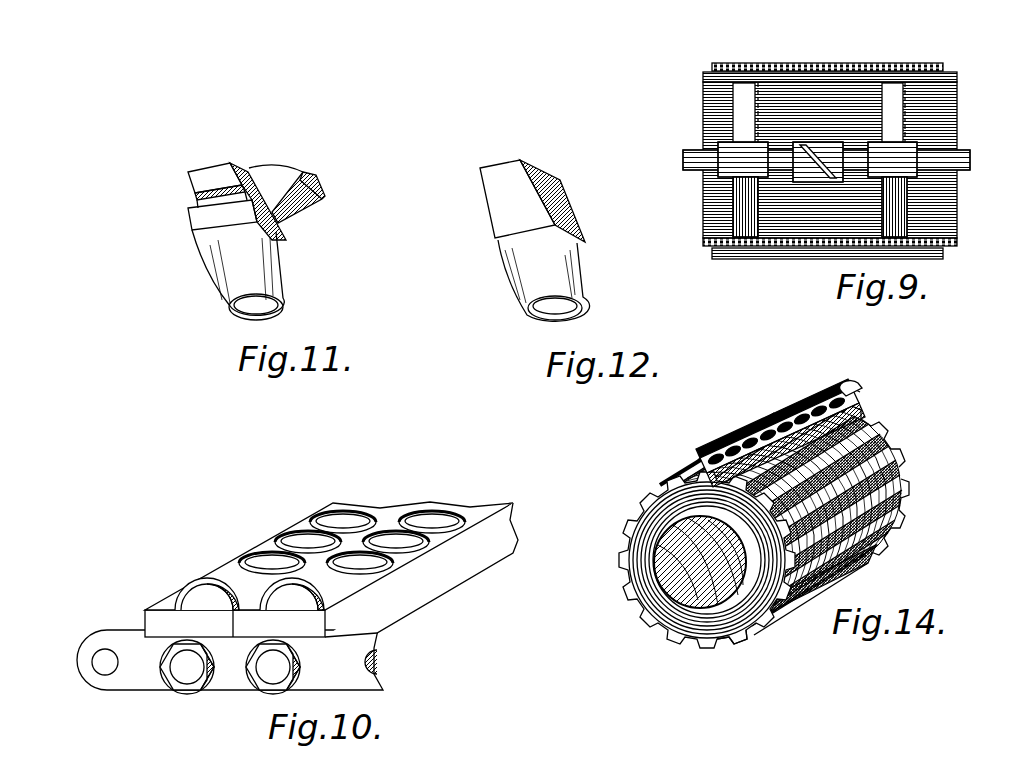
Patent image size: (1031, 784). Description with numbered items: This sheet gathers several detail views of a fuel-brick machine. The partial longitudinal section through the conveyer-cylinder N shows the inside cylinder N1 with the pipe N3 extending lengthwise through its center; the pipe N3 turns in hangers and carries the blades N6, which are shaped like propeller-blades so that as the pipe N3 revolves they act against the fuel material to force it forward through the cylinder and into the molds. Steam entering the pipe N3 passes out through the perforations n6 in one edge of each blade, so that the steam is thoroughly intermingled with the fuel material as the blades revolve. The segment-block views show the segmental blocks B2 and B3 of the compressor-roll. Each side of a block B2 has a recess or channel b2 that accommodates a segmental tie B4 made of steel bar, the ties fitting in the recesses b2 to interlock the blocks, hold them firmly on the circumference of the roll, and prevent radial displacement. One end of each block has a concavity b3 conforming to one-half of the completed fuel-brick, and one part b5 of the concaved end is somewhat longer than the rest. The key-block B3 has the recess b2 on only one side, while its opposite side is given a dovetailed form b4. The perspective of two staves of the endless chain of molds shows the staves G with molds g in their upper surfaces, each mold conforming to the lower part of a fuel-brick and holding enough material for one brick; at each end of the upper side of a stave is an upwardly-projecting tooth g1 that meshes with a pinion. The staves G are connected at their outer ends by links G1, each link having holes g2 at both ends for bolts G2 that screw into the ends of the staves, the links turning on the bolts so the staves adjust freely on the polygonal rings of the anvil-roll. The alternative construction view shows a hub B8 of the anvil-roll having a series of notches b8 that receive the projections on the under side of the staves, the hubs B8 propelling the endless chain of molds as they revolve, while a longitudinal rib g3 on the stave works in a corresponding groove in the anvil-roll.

In FIG. 9, the conveyer-cylinder N is at (815, 63).
In FIG. 9, the inside cylinder N1 is at (947, 140).
In FIG. 9, the pipe N3 is at (698, 157).
In FIG. 9, the blades N6 is at (917, 130).
In FIG. 9, the perforations n6 is at (897, 127).
In FIG. 11, the segmental block B2 is at (236, 239).
In FIG. 11, the recess or channel b2 is at (241, 185).
In FIG. 12, the recess or channel b2 is at (570, 210).
In FIG. 11, the segmental tie B4 is at (302, 185).
In FIG. 11, the concavity b3 is at (283, 307).
In FIG. 12, the concavity b3 is at (580, 305).
In FIG. 11, the elongated part of concaved end b5 is at (232, 317).
In FIG. 12, the elongated part of concaved end b5 is at (534, 326).
In FIG. 12, the segmental key-block B3 is at (544, 280).
In FIG. 12, the dovetailed form b4 is at (522, 179).
In FIG. 10, the stave G is at (443, 582).
In FIG. 14, the stave G is at (830, 393).
In FIG. 10, the link G1 is at (140, 680).
In FIG. 10, the bolt G2 is at (267, 673).
In FIG. 10, the mold g is at (440, 525).
In FIG. 10, the upwardly-projecting tooth g1 is at (350, 595).
In FIG. 14, the upwardly-projecting tooth g1 is at (860, 390).
In FIG. 10, the hole g2 is at (373, 663).
In FIG. 14, the slotted strip g3 is at (705, 467).
In FIG. 14, the hub B8 is at (655, 603).
In FIG. 14, the notch b8 is at (717, 640).